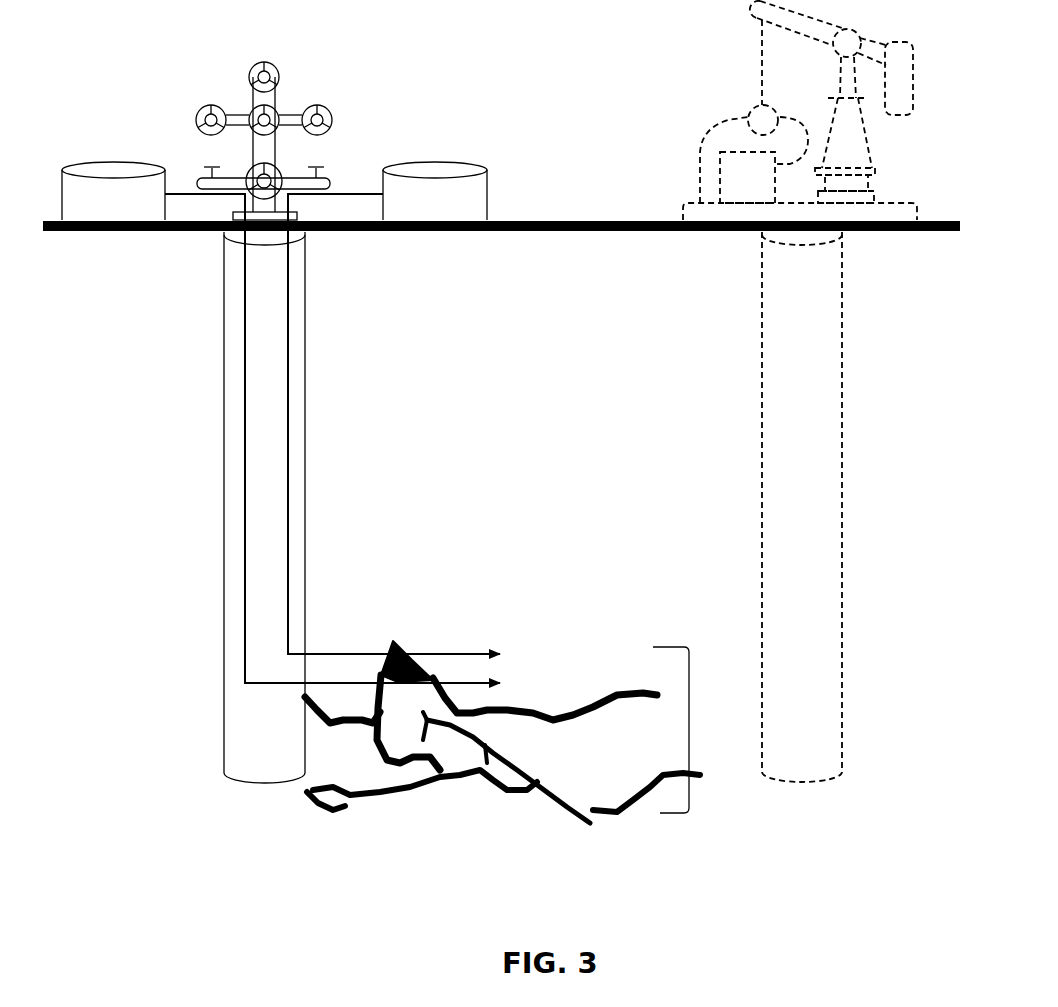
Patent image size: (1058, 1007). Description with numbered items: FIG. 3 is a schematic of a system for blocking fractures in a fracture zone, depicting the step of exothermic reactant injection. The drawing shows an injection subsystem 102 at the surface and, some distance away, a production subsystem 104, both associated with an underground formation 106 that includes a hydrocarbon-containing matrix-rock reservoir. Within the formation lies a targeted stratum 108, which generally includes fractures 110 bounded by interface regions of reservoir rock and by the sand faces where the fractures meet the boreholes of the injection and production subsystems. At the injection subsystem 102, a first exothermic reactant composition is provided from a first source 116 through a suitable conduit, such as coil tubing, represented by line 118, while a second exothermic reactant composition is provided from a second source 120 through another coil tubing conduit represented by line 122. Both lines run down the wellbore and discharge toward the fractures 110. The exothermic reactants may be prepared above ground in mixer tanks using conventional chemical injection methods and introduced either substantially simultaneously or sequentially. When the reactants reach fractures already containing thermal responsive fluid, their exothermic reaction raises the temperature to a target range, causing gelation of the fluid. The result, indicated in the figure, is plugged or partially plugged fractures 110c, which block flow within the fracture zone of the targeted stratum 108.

The injection subsystem 102 is at (372, 62).
The production subsystem 104 is at (728, 60).
The underground formation 106 is at (507, 528).
The targeted stratum 108 is at (692, 745).
The fractures 110 is at (554, 695).
The plugged or partially plugged fractures 110c is at (513, 718).
The first source 116 is at (435, 191).
The line 118 is at (292, 476).
The second source 120 is at (113, 191).
The line 122 is at (243, 504).